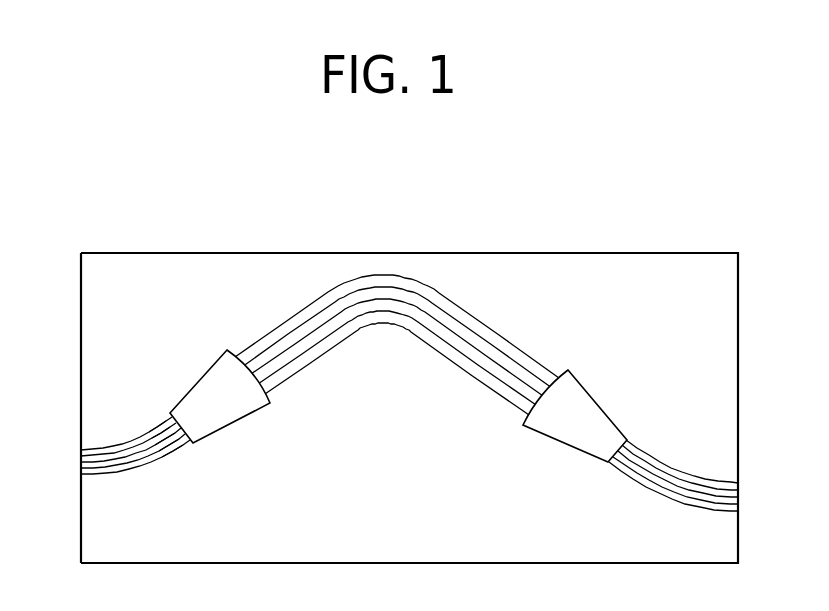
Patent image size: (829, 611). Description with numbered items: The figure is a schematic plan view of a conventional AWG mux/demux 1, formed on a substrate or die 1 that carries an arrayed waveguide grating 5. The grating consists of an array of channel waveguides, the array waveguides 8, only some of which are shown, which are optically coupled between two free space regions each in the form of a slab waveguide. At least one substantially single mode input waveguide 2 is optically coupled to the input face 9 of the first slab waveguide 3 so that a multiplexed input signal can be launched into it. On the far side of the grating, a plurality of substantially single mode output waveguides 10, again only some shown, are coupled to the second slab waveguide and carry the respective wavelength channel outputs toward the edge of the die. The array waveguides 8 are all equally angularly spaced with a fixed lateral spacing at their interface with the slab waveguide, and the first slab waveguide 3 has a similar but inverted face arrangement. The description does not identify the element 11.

The AWG mux/demux 1 is at (665, 236).
The input waveguide 2 is at (123, 473).
The first slab waveguide 3 is at (193, 385).
The arrayed waveguide grating 5 is at (604, 353).
The array waveguides 8 is at (287, 294).
The input face 9 is at (160, 421).
The output waveguides 10 is at (683, 520).
The housing 11 is at (80, 347).